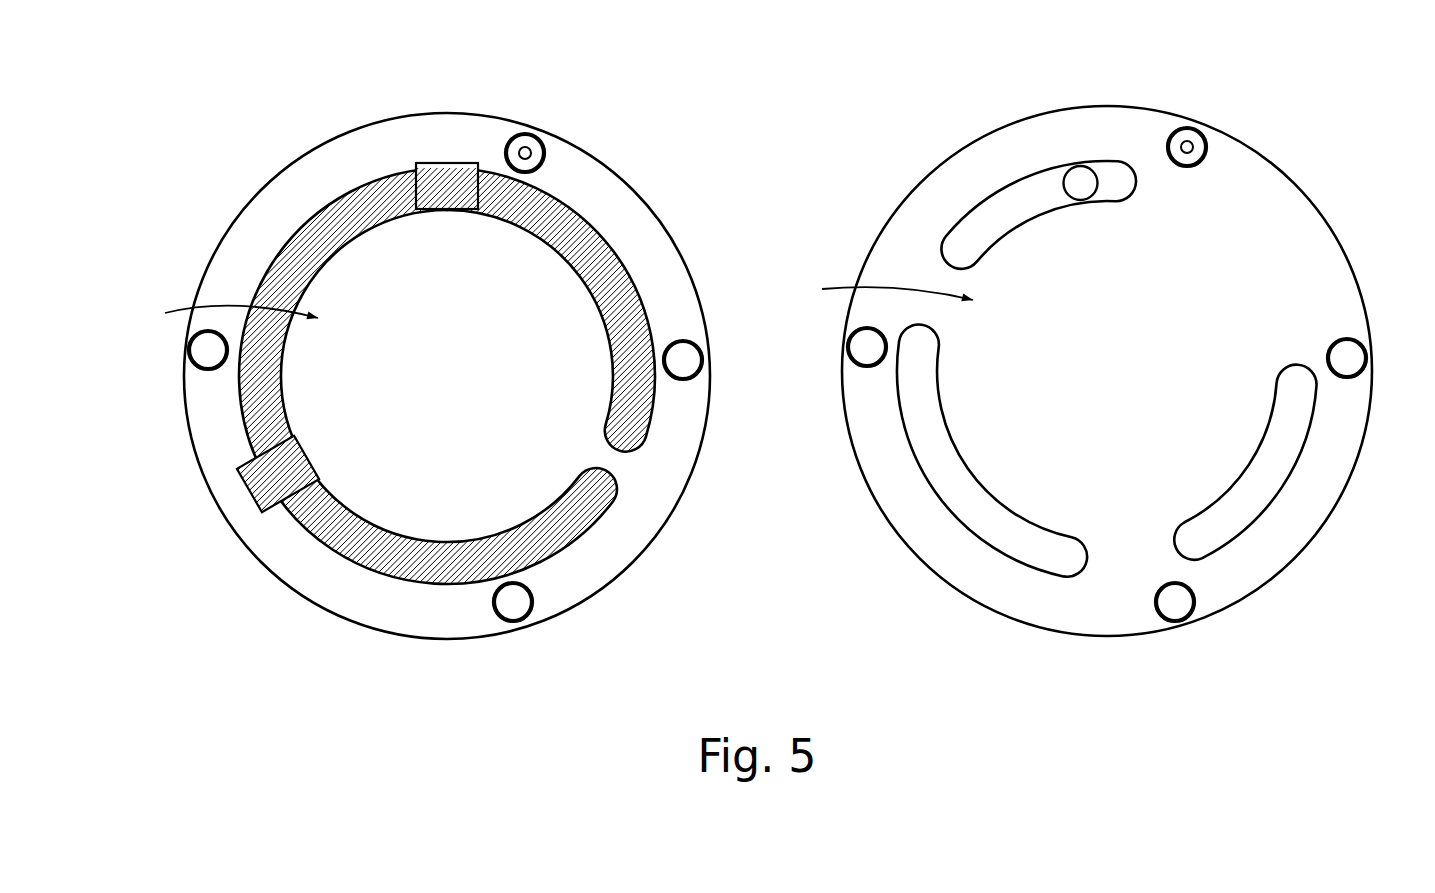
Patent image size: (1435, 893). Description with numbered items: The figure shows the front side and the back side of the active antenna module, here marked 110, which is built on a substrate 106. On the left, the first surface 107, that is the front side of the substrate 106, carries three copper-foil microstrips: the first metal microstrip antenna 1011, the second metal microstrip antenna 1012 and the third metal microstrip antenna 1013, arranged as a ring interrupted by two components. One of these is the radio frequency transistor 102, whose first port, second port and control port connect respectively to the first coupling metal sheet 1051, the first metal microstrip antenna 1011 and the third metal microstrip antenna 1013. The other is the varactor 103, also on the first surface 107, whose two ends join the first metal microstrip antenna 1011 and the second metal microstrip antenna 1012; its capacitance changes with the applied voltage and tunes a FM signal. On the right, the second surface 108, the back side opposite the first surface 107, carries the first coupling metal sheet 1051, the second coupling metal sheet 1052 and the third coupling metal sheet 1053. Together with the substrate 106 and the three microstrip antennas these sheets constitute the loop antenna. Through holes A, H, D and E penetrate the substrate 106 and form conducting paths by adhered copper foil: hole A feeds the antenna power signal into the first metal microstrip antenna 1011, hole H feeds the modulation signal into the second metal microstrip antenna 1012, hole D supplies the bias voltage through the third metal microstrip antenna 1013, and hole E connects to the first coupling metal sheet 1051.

The lens driving assembly 110 is at (764, 46).
The radio frequency transistor 102 is at (442, 162).
The varactor 103 is at (250, 493).
The first metal microstrip antenna 1011 is at (282, 282).
The second metal microstrip antenna 1012 is at (470, 578).
The third metal microstrip antenna 1013 is at (590, 248).
The substrate 106 is at (667, 465).
The first surface 107 is at (212, 313).
The second surface 108 is at (868, 290).
The first coupling metal sheet 1051 is at (993, 215).
The second coupling metal sheet 1052 is at (937, 465).
The third coupling metal sheet 1053 is at (1272, 463).